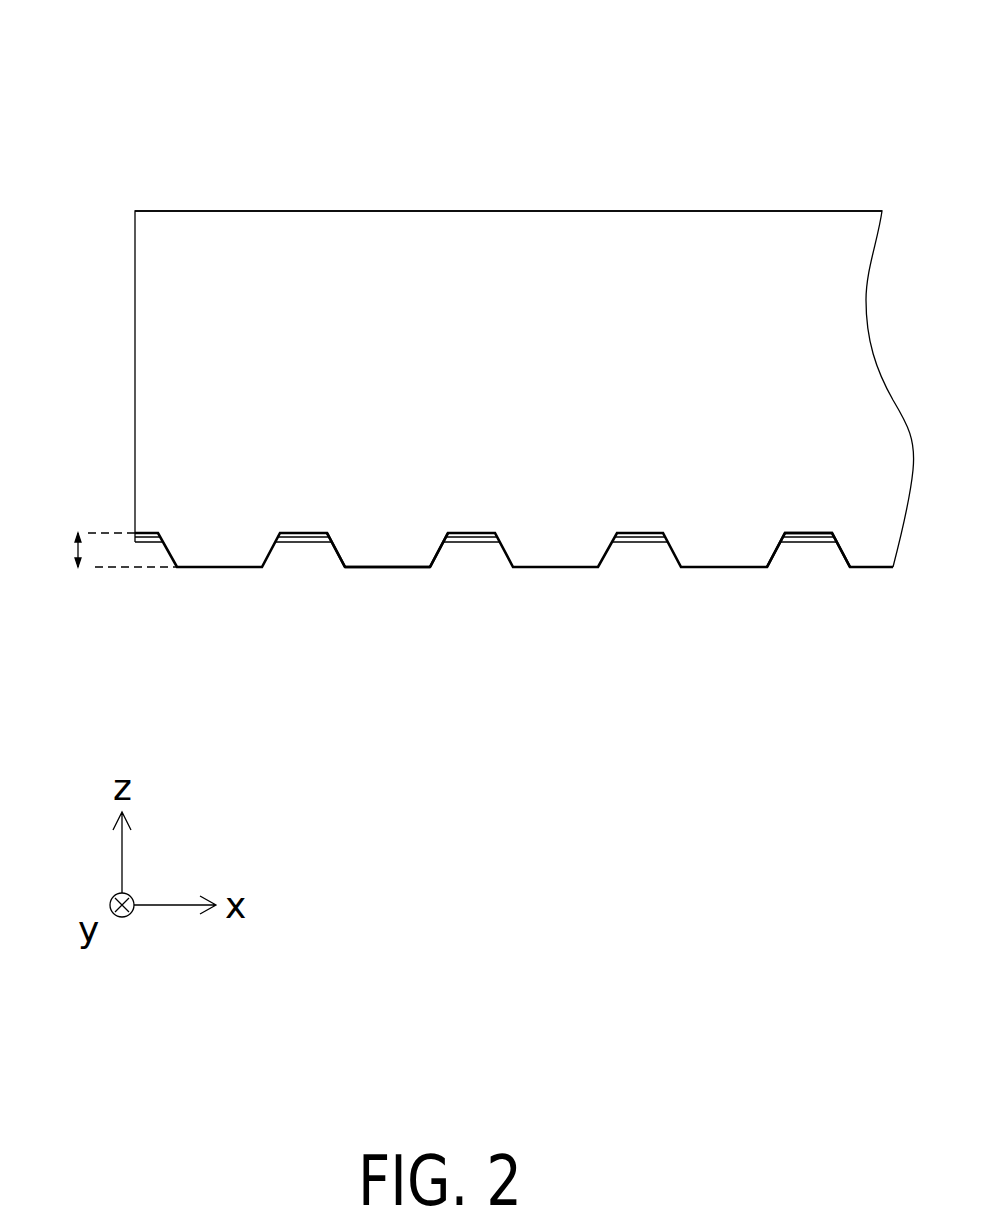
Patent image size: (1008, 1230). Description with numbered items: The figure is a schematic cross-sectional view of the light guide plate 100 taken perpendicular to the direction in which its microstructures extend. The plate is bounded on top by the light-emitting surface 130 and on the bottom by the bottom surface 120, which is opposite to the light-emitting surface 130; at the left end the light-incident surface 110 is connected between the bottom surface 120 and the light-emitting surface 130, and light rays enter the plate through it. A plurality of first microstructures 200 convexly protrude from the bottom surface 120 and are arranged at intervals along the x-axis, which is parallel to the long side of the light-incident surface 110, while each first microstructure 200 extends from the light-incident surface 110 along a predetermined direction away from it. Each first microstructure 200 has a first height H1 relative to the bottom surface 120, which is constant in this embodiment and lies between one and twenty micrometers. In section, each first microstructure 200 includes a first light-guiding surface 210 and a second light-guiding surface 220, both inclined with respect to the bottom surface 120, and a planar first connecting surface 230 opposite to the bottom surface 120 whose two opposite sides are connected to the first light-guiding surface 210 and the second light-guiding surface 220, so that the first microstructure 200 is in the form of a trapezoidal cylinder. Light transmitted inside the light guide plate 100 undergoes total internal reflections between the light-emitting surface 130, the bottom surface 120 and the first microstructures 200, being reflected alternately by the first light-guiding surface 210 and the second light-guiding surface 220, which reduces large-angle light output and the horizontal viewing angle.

The light guide plate 100 is at (105, 52).
The light-incident surface 110 is at (157, 363).
The bottom surface 120 is at (808, 533).
The light-emitting surface 130 is at (296, 211).
The first microstructure 200 is at (733, 620).
The first light-guiding surface 210 is at (458, 533).
The second light-guiding surface 220 is at (331, 549).
The first connecting surface 230 is at (382, 568).
The first height H1 is at (103, 550).